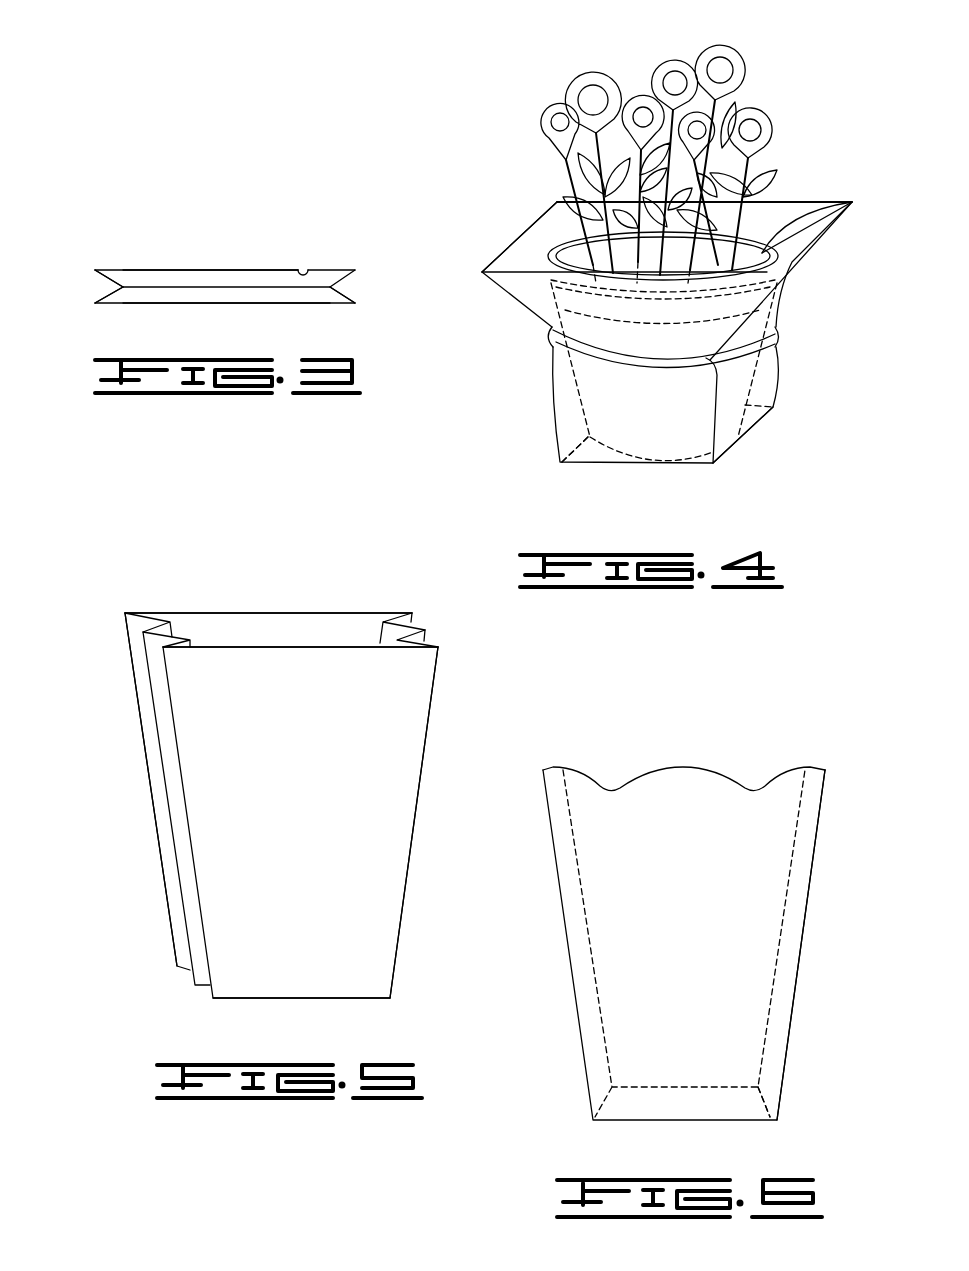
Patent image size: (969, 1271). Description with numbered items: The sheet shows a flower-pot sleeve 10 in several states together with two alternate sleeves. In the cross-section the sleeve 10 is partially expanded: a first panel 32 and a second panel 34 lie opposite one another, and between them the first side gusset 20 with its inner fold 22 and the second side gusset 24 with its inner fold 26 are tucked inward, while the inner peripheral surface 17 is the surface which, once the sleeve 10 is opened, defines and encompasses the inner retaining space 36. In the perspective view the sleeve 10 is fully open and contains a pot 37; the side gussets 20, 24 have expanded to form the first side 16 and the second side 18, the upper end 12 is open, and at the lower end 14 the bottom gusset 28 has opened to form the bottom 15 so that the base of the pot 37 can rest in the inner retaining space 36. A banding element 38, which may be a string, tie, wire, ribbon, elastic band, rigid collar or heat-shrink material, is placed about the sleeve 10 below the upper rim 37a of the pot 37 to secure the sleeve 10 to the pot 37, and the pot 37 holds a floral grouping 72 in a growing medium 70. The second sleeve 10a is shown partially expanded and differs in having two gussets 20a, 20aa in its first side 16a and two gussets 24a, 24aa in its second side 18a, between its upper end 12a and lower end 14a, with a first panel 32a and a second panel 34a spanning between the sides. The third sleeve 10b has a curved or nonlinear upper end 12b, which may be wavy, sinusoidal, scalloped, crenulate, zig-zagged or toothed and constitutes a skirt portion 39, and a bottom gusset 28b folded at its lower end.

In FIG. 3, the sleeve 10 is at (173, 225).
In FIG. 4, the sleeve 10 is at (829, 300).
In FIG. 5, the sleeve 10a is at (153, 905).
In FIG. 6, the sleeve 10b is at (553, 965).
In FIG. 4, the upper end 12 is at (567, 190).
In FIG. 5, the upper end 12a is at (233, 612).
In FIG. 6, the upper end 12b is at (687, 765).
In FIG. 4, the lower end 14 is at (617, 463).
In FIG. 5, the lower end 14a is at (360, 1000).
In FIG. 4, the bottom 15 is at (590, 452).
In FIG. 4, the first side 16 is at (498, 260).
In FIG. 5, the first side 16a is at (150, 789).
In FIG. 3, the inner peripheral surface 17 is at (311, 272).
In FIG. 4, the second side 18 is at (797, 270).
In FIG. 5, the second side 18a is at (407, 878).
In FIG. 3, the first side gusset 20 is at (97, 277).
In FIG. 4, the first side gusset 20 is at (537, 217).
In FIG. 5, the gusset 20a is at (137, 625).
In FIG. 5, the gusset 20aa is at (158, 668).
In FIG. 3, the inner fold 22 is at (123, 268).
In FIG. 3, the second side gusset 24 is at (348, 277).
In FIG. 4, the second side gusset 24 is at (760, 382).
In FIG. 5, the gusset 24a is at (410, 622).
In FIG. 5, the gusset 24aa is at (423, 641).
In FIG. 3, the inner fold 26 is at (330, 300).
In FIG. 4, the bottom gusset 28 is at (752, 427).
In FIG. 6, the bottom gusset 28b is at (766, 1086).
In FIG. 3, the first panel 32 is at (226, 303).
In FIG. 5, the first panel 32a is at (400, 760).
In FIG. 3, the second panel 34 is at (233, 270).
In FIG. 5, the second panel 34a is at (313, 612).
In FIG. 3, the inner retaining space 36 is at (167, 303).
In FIG. 4, the inner retaining space 36 is at (777, 220).
In FIG. 4, the pot 37 is at (760, 367).
In FIG. 4, the upper rim 37a is at (840, 213).
In FIG. 4, the banding element 38 is at (775, 333).
In FIG. 6, the skirt portion 39 is at (822, 803).
In FIG. 4, the growing medium 70 is at (823, 242).
In FIG. 4, the floral grouping 72 is at (766, 90).